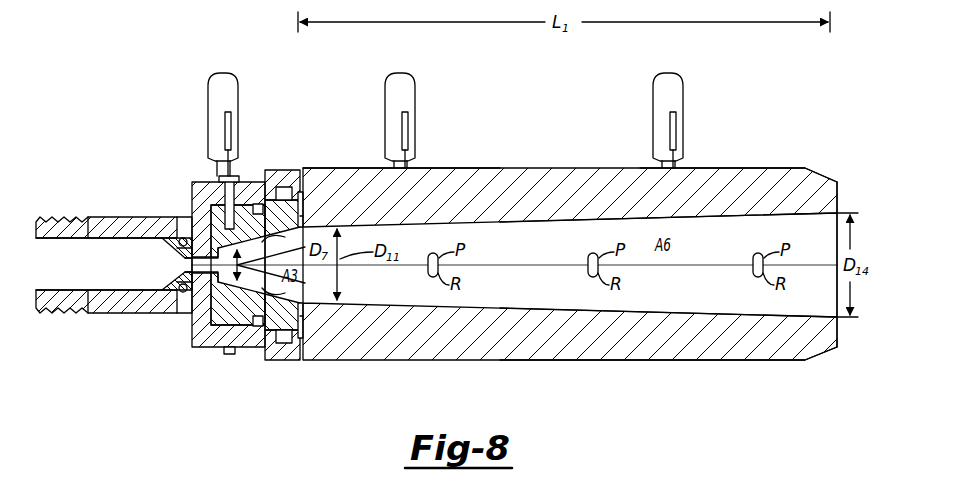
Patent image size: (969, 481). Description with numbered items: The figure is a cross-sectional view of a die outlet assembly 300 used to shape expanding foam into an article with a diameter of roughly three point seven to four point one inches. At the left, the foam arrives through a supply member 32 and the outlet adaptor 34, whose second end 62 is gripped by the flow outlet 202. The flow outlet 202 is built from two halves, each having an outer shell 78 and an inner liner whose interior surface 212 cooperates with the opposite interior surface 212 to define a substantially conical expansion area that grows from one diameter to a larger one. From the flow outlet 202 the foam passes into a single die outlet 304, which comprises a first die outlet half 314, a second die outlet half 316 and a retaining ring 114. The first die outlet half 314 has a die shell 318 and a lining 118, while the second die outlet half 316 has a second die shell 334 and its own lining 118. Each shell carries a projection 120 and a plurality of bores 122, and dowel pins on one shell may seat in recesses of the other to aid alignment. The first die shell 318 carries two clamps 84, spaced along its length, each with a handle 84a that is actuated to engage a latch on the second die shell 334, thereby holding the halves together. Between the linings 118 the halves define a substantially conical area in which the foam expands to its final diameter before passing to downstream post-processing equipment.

The fluid supply pipe 32 is at (127, 213).
The outlet adaptor 34 is at (157, 272).
The second end of the outlet adaptor 62 is at (206, 286).
The outer shell 78 is at (239, 176).
The clamp 84 is at (219, 72).
The handle 84a is at (210, 100).
The retaining ring 114 is at (296, 342).
The lining 118 is at (683, 220).
The projection 120 is at (284, 183).
The bores 122 is at (316, 196).
The flow outlet 202 is at (260, 178).
The interior surface 212 is at (303, 216).
The die outlet assembly 300 is at (753, 90).
The die outlet 304 is at (546, 165).
The first die outlet half 314 is at (472, 165).
The second die outlet half 316 is at (623, 365).
The die shell 318 is at (727, 165).
The second die shell 334 is at (705, 365).